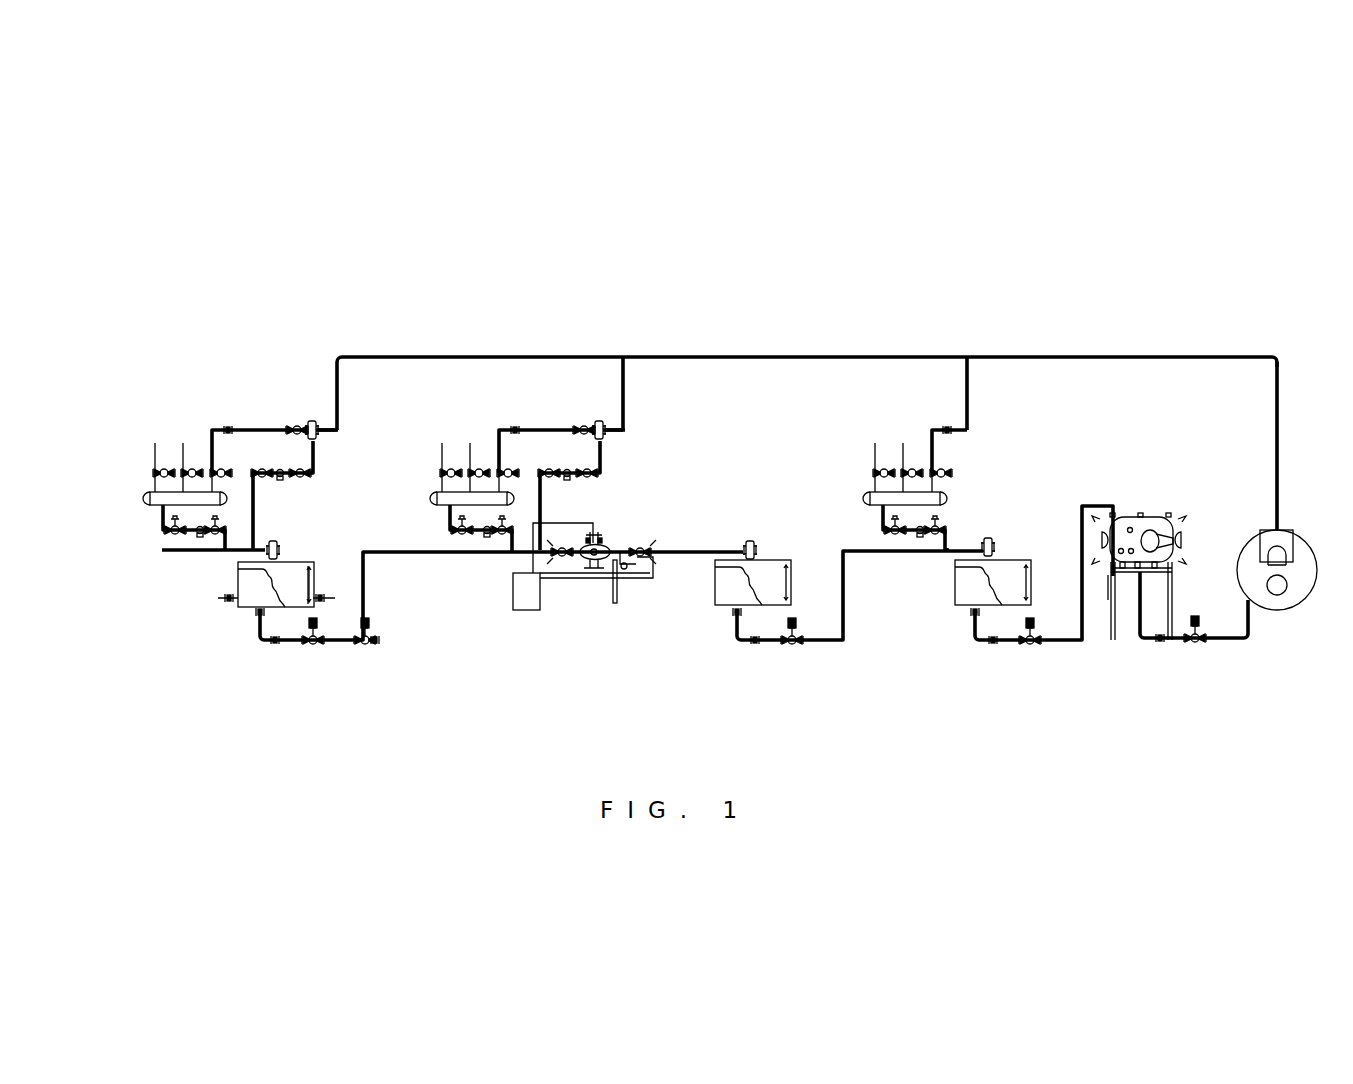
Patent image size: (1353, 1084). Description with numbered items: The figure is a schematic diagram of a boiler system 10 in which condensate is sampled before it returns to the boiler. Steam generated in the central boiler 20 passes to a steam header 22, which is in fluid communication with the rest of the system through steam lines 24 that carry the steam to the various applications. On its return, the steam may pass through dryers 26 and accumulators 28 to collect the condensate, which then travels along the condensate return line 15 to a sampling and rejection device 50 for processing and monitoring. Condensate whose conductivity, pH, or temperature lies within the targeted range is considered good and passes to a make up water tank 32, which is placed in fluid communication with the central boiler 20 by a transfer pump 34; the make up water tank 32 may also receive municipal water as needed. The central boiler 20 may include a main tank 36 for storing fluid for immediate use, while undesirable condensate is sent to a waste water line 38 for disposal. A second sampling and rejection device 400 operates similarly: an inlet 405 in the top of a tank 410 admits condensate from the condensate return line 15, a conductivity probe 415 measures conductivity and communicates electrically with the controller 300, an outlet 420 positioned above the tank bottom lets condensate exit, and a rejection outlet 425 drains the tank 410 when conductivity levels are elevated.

The boiler system 10 is at (896, 283).
The condensate return line 15 is at (294, 642).
The central boiler 20 is at (1298, 540).
The steam header 22 is at (1280, 385).
The steam lines 24 is at (1160, 355).
The dryers 26 is at (308, 420).
The accumulators 28 is at (143, 494).
The make up water tank 32 is at (772, 598).
The transfer pump 34 is at (1196, 645).
The main tank 36 is at (1177, 517).
The waste water line 38 is at (620, 600).
The sampling and rejection device 50 is at (613, 545).
The controller 300 is at (520, 595).
The second sampling and rejection device 400 is at (230, 576).
The inlet 405 is at (274, 547).
The tank 410 is at (252, 595).
The conductivity probe 415 is at (320, 602).
The outlet 420 is at (310, 565).
The rejection outlet 425 is at (260, 614).